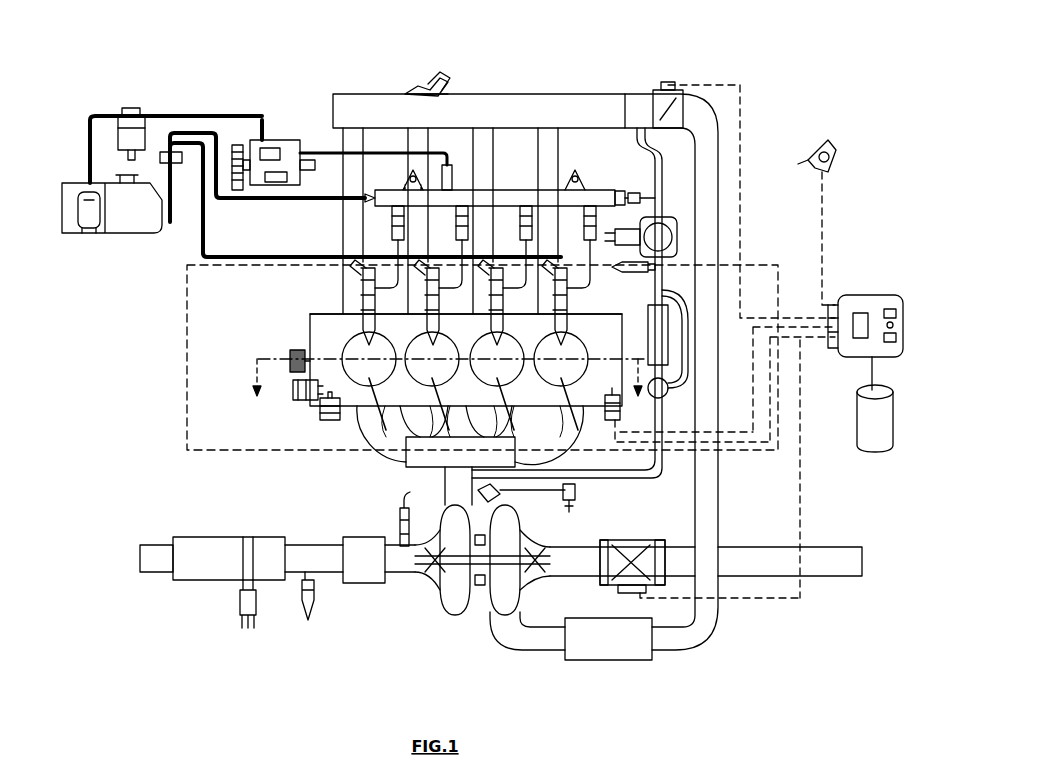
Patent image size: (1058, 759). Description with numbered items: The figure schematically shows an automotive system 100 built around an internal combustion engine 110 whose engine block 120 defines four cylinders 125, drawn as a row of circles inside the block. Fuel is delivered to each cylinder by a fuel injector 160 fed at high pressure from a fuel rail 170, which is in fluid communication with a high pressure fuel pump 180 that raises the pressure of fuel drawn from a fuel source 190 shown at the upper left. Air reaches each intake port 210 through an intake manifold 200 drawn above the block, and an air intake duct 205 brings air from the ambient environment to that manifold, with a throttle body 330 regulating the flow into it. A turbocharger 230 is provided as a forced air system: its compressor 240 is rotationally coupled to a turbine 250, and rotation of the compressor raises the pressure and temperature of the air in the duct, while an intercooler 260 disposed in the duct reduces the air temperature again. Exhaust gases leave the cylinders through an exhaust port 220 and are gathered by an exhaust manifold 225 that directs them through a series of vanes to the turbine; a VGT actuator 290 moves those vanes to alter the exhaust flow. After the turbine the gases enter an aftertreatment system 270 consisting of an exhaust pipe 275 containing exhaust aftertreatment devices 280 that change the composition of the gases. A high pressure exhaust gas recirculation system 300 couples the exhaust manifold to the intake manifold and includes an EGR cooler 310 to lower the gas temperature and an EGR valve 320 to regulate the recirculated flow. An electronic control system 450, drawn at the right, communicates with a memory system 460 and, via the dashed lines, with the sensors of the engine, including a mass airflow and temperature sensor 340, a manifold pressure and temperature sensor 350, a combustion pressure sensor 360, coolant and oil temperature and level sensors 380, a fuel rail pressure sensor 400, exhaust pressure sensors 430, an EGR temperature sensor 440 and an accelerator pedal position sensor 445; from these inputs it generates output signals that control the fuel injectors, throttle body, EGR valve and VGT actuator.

The automotive system 100 is at (246, 80).
The internal combustion engine 110 is at (571, 86).
The engine block 120 is at (307, 318).
The cylinder 125 is at (581, 341).
The fuel injector 160 is at (370, 293).
The fuel rail 170 is at (372, 198).
The high pressure fuel pump 180 is at (284, 146).
The fuel source 190 is at (135, 218).
The intake manifold 200 is at (484, 110).
The air intake duct 205 is at (831, 563).
The intake port 210 is at (353, 316).
The exhaust port 220 is at (367, 408).
The exhaust manifold 225 is at (433, 460).
The turbocharger 230 is at (452, 622).
The compressor 240 is at (508, 590).
The turbine 250 is at (432, 611).
The intercooler 260 is at (633, 648).
The aftertreatment system 270 is at (213, 527).
The exhaust pipe 275 is at (152, 560).
The exhaust aftertreatment device 280 is at (200, 562).
The VGT actuator 290 is at (502, 494).
The high pressure exhaust gas recirculation system 300 is at (629, 484).
The EGR cooler 310 is at (658, 352).
The EGR valve 320 is at (666, 215).
The throttle body 330 is at (669, 80).
The mass airflow and temperature sensor 340 is at (628, 580).
The manifold pressure and temperature sensor 350 is at (418, 84).
The combustion pressure sensor 360 is at (382, 420).
The coolant and oil temperature and level sensors 380 is at (322, 408).
The fuel rail pressure sensor 400 is at (643, 197).
The exhaust pressure sensors 430 is at (313, 614).
The EGR temperature sensor 440 is at (656, 266).
The accelerator pedal position sensor 445 is at (825, 148).
The electronic control system 450 is at (870, 295).
The memory system 460 is at (873, 433).